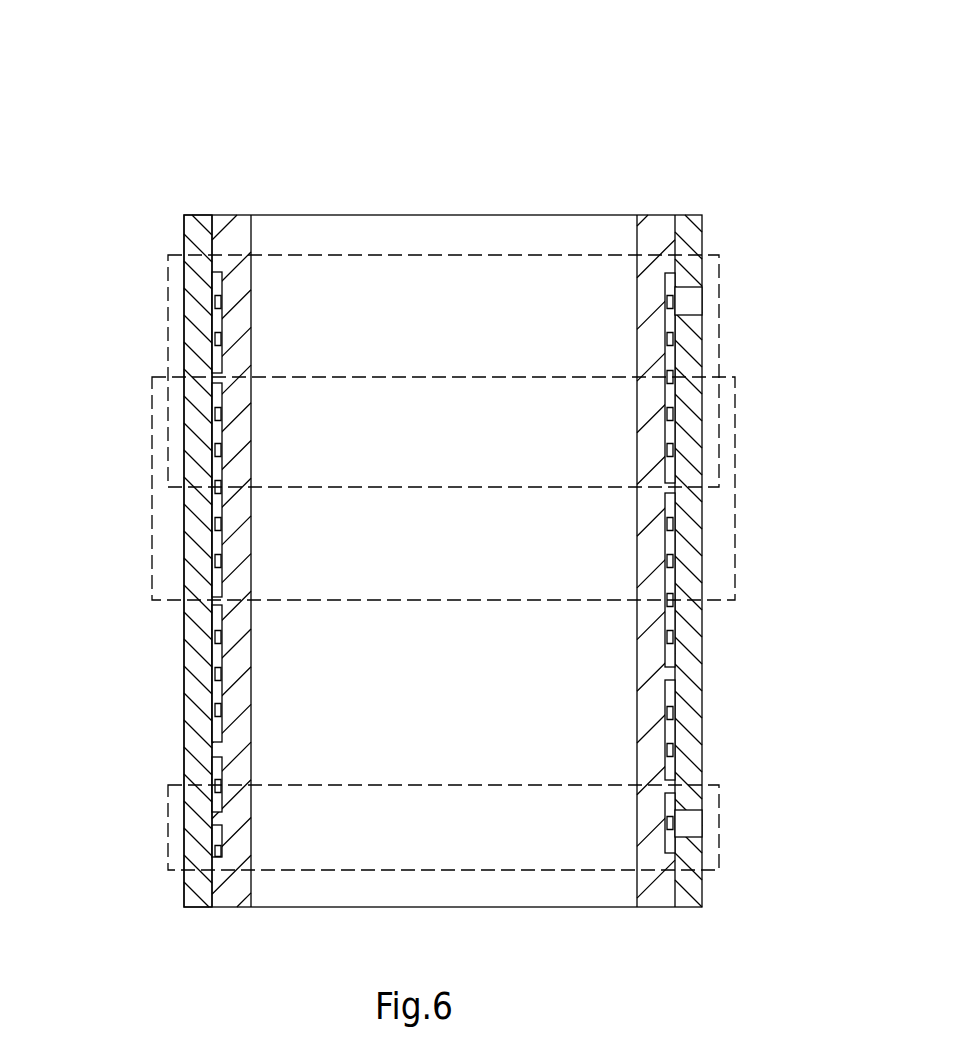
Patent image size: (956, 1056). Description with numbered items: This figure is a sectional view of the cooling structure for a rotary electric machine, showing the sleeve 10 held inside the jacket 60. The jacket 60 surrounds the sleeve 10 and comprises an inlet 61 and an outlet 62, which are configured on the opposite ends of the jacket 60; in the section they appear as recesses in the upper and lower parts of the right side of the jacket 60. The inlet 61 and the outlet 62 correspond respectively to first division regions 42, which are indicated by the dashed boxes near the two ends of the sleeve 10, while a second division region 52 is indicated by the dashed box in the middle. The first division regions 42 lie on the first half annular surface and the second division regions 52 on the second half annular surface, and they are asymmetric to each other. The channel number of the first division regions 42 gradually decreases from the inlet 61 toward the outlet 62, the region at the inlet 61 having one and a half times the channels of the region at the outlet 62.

The sleeve 10 is at (237, 233).
The jacket 60 is at (187, 233).
The inlet 61 is at (692, 303).
The outlet 62 is at (694, 818).
The first division region 42 is at (167, 318).
The second division region 52 is at (152, 487).